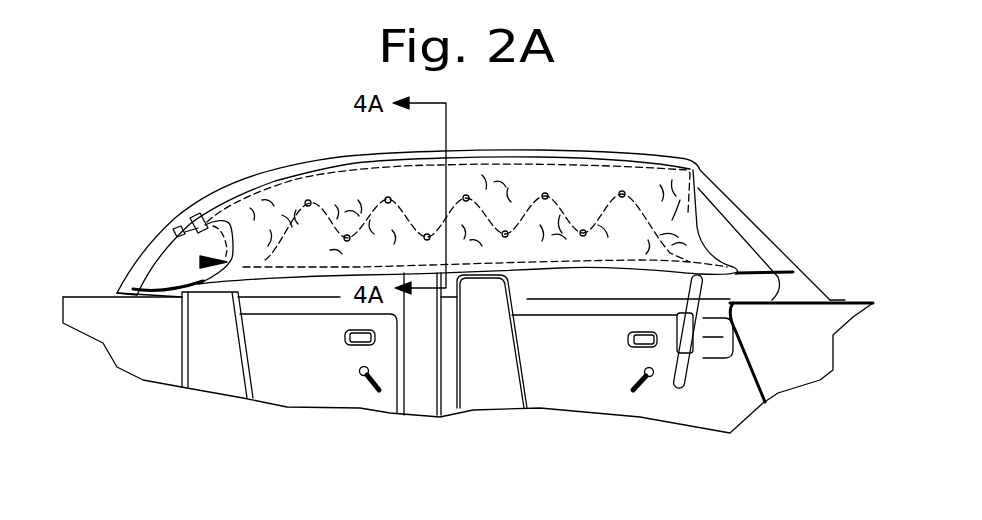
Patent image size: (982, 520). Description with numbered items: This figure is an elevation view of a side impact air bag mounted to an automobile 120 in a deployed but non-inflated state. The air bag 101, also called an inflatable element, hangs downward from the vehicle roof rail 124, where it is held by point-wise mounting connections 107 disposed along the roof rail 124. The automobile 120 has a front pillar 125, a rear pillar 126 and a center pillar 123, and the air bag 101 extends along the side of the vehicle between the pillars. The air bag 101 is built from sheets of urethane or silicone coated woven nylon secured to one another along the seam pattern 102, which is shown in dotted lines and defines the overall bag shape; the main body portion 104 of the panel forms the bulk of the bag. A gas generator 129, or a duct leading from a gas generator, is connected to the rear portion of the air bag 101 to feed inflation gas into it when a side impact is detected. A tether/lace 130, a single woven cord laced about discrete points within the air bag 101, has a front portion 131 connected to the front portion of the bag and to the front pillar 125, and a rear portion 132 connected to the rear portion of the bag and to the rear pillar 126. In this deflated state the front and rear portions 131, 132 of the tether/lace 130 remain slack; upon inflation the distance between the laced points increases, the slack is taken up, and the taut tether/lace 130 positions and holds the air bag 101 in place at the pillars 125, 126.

The air bag 101 is at (148, 293).
The seam pattern 102 is at (297, 180).
The main body portion 104 is at (587, 273).
The point-wise mounting connections 107 is at (553, 160).
The automobile 120 is at (233, 405).
The center pillar 123 is at (428, 385).
The roof rail 124 is at (238, 180).
The front pillar 125 is at (735, 210).
The rear pillar 126 is at (122, 293).
The gas generator 129 is at (177, 227).
The tether/lace 130 is at (583, 233).
The front portion of tether/lace 131 is at (773, 273).
The rear portion of tether/lace 132 is at (205, 262).